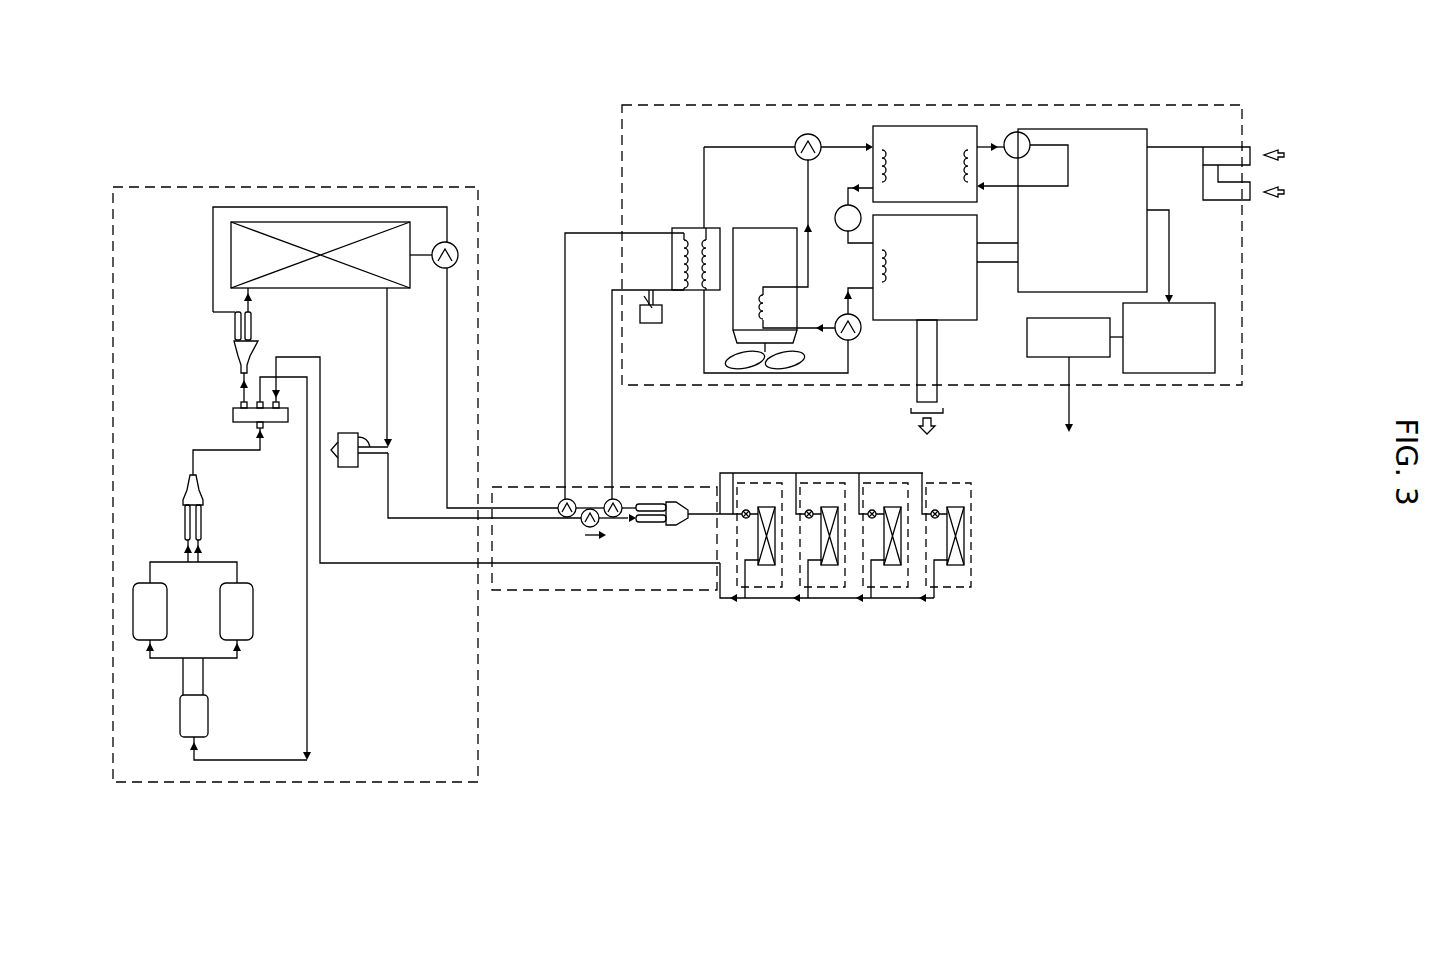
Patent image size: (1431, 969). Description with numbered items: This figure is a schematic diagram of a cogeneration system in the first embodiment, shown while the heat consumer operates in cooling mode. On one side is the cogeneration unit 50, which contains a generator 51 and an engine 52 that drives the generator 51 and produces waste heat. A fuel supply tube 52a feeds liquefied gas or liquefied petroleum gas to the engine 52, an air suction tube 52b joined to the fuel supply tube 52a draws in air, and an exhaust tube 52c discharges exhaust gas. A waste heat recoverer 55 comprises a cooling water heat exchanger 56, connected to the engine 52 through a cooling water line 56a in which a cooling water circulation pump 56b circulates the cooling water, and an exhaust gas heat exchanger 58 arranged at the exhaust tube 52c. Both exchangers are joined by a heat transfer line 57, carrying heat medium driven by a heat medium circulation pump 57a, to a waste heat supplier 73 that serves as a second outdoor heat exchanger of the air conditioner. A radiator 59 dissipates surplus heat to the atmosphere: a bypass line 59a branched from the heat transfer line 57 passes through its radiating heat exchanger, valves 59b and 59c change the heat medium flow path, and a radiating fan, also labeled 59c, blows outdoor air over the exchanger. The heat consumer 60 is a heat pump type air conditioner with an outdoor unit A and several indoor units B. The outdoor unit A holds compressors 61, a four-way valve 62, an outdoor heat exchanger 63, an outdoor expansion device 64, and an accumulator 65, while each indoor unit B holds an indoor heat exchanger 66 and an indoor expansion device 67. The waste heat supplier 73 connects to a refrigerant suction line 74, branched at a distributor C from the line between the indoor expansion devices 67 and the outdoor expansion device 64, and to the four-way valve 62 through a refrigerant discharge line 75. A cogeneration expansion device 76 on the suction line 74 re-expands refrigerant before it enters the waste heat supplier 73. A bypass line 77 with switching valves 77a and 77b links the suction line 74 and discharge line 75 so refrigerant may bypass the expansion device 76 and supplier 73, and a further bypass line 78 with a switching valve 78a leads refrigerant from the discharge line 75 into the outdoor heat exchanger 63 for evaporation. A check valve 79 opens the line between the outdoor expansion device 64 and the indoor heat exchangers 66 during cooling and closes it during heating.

The cogeneration unit 50 is at (1197, 80).
The generator 51 is at (1212, 342).
The engine 52 is at (1135, 262).
The fuel supply tube 52a is at (1215, 147).
The air suction tube 52b is at (1212, 200).
The exhaust tube 52c is at (932, 355).
The waste heat recoverer 55 is at (945, 165).
The cooling water heat exchanger 56 is at (900, 135).
The cooling water line 56a is at (862, 212).
The cooling water circulation pump 56b is at (1020, 130).
The heat transfer line 57 is at (750, 147).
The heat medium circulation pump 57a is at (828, 205).
The exhaust gas heat exchanger 58 is at (943, 235).
The radiator 59 is at (735, 325).
The bypass line 59a is at (806, 192).
The valve 59b is at (742, 365).
The valve 59c is at (802, 135).
The heat consumer 60 is at (528, 678).
The compressors 61 is at (160, 586).
The 4-way valve 62 is at (233, 414).
The outdoor heat exchanger 63 is at (340, 222).
The outdoor expansion device 64 is at (348, 467).
The accumulator 65 is at (208, 712).
The indoor heat exchanger 66 is at (767, 570).
The indoor expansion device 67 is at (746, 508).
The waste heat supplier 73 is at (676, 228).
The refrigerant suction line 74 is at (612, 417).
The refrigerant discharge line 75 is at (565, 400).
The cogeneration expansion device 76 is at (650, 323).
The bypass line 77 is at (584, 475).
The switching valve 77a is at (620, 500).
The switching valve 77b is at (560, 500).
The bypass line 78 is at (422, 262).
The switching valve 78a is at (458, 255).
The check valve 79 is at (582, 527).
The outdoor unit A is at (157, 788).
The indoor unit B is at (736, 600).
The distributor C is at (676, 502).